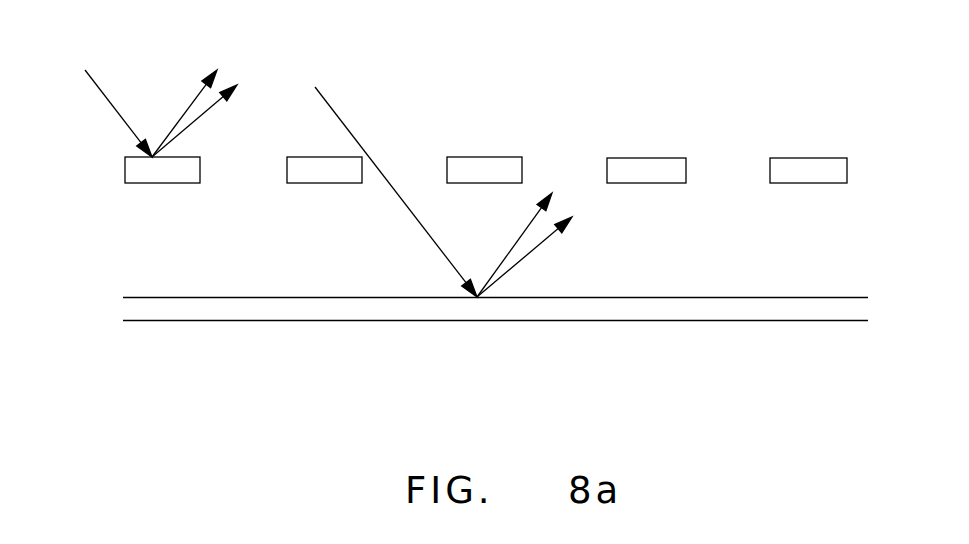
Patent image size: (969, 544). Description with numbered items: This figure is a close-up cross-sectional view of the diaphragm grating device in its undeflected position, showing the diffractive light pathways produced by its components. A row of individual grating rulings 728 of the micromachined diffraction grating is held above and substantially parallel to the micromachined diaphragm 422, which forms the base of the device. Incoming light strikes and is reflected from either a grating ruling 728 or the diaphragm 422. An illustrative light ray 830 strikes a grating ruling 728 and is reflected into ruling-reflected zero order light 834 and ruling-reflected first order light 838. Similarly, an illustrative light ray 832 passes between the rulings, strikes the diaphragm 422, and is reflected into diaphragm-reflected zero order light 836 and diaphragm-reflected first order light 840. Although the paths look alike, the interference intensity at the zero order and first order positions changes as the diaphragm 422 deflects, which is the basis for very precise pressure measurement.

The grating ruling 728 is at (823, 169).
The micromachined diaphragm 422 is at (847, 310).
The light ray striking grating ruling 830 is at (93, 104).
The light ray striking diaphragm 832 is at (396, 187).
The ruling-reflected zero order light 834 is at (190, 102).
The ruling-reflected first order light 838 is at (218, 116).
The diaphragm-reflected zero order light 836 is at (513, 245).
The diaphragm-reflected first order light 840 is at (533, 257).